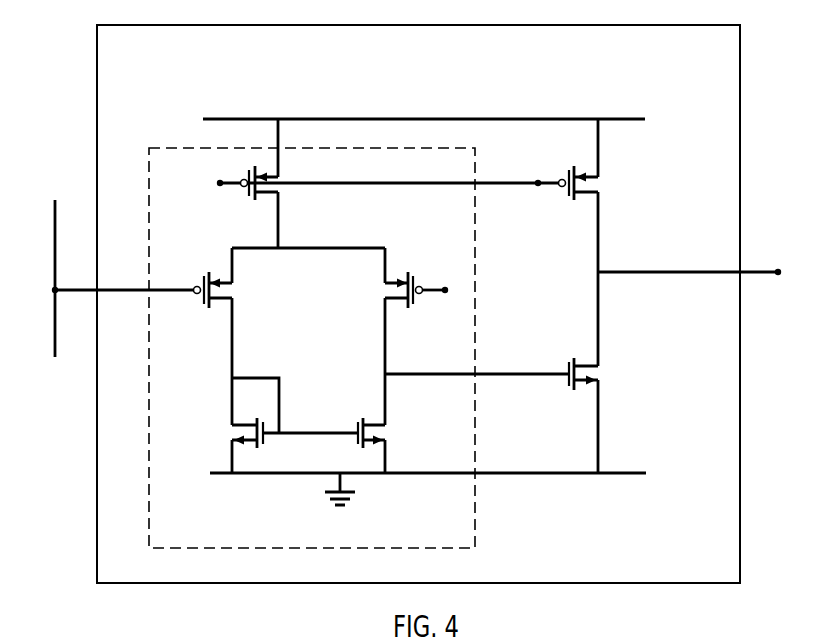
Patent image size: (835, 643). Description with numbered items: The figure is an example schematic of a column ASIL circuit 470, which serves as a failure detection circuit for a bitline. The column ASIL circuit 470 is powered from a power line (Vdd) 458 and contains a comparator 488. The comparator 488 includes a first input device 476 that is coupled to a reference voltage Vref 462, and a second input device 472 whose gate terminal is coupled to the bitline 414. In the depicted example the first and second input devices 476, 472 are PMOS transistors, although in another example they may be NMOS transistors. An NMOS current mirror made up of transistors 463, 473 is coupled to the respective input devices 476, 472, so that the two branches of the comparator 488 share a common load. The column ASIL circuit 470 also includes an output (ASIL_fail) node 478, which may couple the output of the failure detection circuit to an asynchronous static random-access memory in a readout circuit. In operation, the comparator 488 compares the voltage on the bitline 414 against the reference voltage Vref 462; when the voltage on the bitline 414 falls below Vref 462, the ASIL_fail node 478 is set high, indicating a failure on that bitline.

The bitline 414 is at (55, 223).
The power line (Vdd) 458 is at (346, 118).
The column ASIL circuit 470 is at (642, 88).
The second input device 472 is at (200, 305).
The Vref 462 is at (445, 295).
The first input device 476 is at (418, 272).
The transistor 473 is at (226, 438).
The transistor 463 is at (388, 442).
The comparator 488 is at (202, 538).
The output (ASIL_fail) node 478 is at (777, 278).